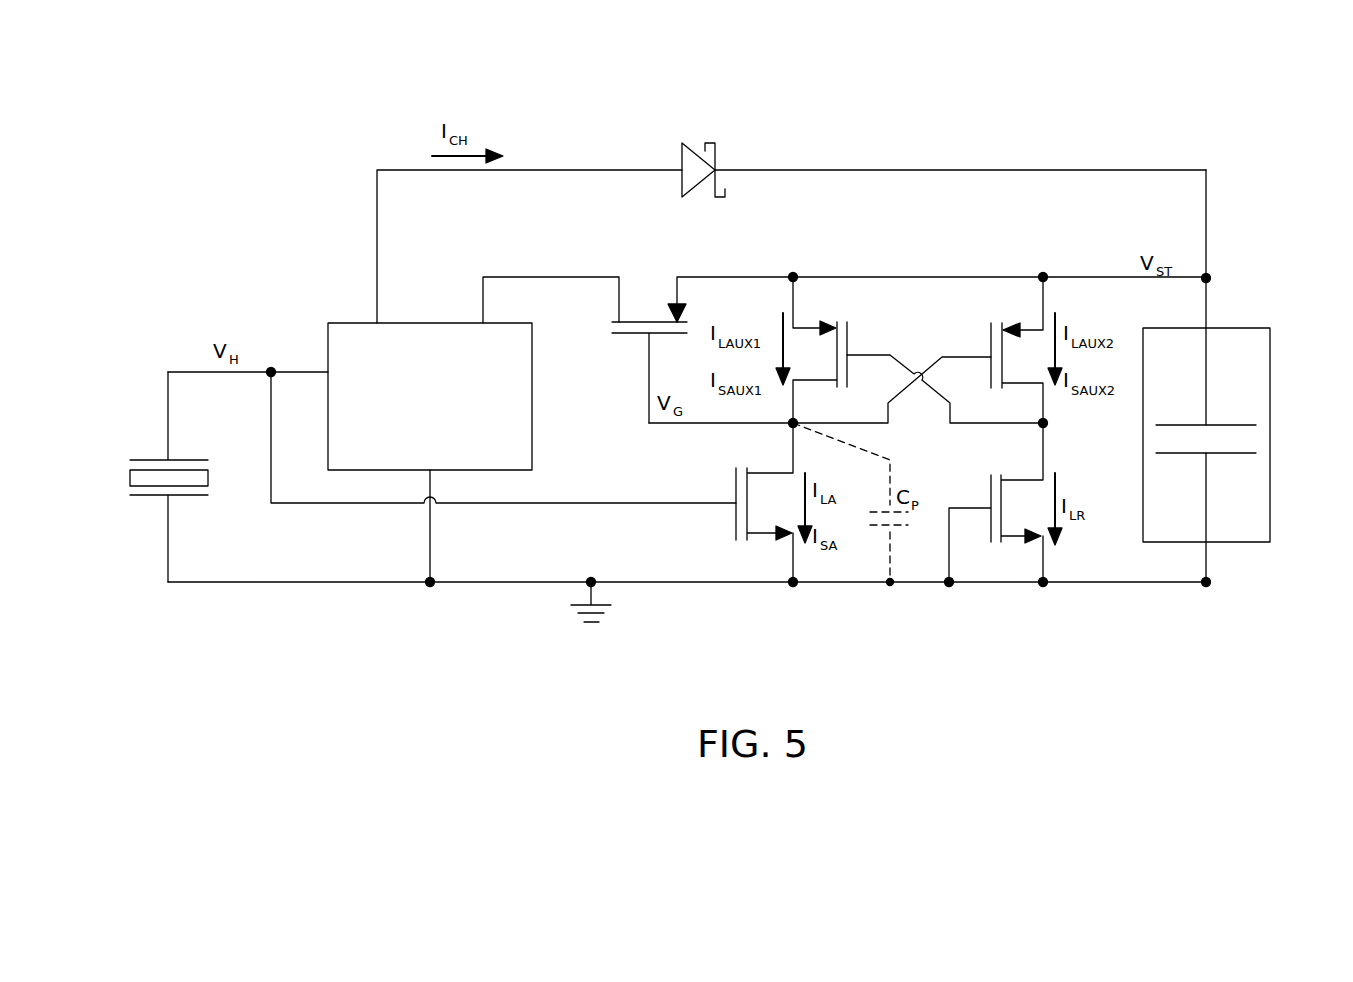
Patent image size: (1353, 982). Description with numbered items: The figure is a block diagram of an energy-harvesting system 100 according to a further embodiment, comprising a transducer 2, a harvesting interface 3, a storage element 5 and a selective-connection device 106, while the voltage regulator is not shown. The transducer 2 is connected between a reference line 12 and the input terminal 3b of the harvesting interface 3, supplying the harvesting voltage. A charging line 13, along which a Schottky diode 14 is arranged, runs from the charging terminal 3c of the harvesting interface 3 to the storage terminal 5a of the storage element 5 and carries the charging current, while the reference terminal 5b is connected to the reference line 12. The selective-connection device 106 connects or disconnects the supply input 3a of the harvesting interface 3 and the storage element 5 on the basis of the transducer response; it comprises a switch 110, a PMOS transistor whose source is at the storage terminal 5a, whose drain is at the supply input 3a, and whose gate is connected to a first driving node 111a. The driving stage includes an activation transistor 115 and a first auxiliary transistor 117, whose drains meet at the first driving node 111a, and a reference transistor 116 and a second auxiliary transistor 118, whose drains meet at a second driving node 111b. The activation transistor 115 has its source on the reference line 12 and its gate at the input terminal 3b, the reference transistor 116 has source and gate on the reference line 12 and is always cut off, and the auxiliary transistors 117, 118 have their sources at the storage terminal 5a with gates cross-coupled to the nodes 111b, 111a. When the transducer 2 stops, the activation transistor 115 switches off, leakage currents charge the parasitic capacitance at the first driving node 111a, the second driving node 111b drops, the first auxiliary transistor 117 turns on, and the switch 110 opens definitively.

The energy-harvesting system 100 is at (1208, 94).
The transducer 2 is at (125, 478).
The harvesting interface 3 is at (532, 450).
The supply input 3a is at (483, 288).
The input terminal 3b is at (271, 372).
The charging terminal 3c is at (377, 241).
The storage element 5 is at (1262, 378).
The storage terminal 5a is at (1215, 278).
The reference terminal 5b is at (1212, 585).
The reference line 12 is at (843, 586).
The charging line 13 is at (848, 168).
The Schottky diode 14 is at (681, 165).
The selective-connection device 106 is at (887, 237).
The switch 110 is at (653, 320).
The first driving node 111a is at (793, 423).
The second driving node 111b is at (1050, 425).
The activation transistor 115 is at (736, 520).
The reference transistor 116 is at (990, 490).
The first auxiliary transistor 117 is at (852, 330).
The second auxiliary transistor 118 is at (991, 340).